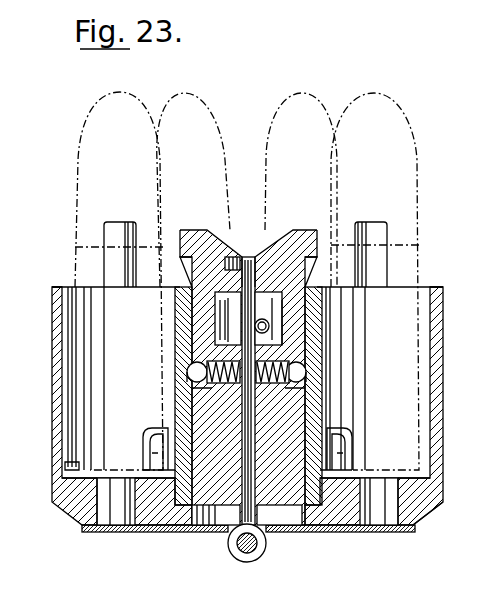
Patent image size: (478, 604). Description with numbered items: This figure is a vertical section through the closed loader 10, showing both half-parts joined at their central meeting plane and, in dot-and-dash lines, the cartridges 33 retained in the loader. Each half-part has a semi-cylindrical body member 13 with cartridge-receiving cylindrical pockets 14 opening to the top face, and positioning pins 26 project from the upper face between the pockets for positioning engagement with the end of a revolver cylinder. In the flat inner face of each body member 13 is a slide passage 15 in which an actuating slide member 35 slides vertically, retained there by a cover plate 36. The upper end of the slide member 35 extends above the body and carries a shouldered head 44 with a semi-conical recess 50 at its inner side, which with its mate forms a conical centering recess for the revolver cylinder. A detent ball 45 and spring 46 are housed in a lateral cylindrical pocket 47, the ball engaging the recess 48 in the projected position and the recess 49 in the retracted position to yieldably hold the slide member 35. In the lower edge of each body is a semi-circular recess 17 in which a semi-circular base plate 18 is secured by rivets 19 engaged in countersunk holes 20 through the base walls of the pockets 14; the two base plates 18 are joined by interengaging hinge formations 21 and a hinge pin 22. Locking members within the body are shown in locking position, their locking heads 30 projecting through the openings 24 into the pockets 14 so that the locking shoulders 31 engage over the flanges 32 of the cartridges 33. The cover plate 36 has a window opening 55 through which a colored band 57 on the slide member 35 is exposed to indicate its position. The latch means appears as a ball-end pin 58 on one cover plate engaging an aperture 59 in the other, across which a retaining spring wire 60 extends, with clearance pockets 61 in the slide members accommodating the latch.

The loader 10 is at (62, 259).
The semi-cylindrical body member 13 is at (56, 371).
The cartridge-receiving cylindrical pockets 14 is at (64, 401).
The slide passage 15 is at (198, 530).
The semi-circular recess 17 is at (405, 525).
The semi-circular base plate 18 is at (172, 528).
The rivets 19 is at (124, 528).
The countersunk holes 20 is at (100, 528).
The hinge formations 21 is at (52, 310).
The hinge pin 22 is at (248, 563).
The openings 24 is at (152, 434).
The positioning pins 26 is at (117, 232).
The locking head 30 is at (152, 453).
The locking shoulders 31 is at (155, 467).
The cartridge flanges 32 is at (60, 479).
The cartridges 33 is at (80, 177).
The actuating slide member 35 is at (192, 277).
The cover plate 36 is at (221, 512).
The shouldered head 44 is at (193, 240).
The detent ball 45 is at (188, 371).
The spring 46 is at (276, 365).
The lateral cylindrical pocket 47 is at (284, 331).
The recess 48 is at (196, 384).
The recess 49 is at (212, 391).
The semi-conical recess 50 is at (212, 245).
The window opening 55 is at (243, 396).
The colored band 57 is at (251, 255).
The ball-end pin 58 is at (268, 324).
The aperture 59 is at (228, 323).
The retaining spring wire 60 is at (222, 311).
The clearance pockets 61 is at (262, 301).